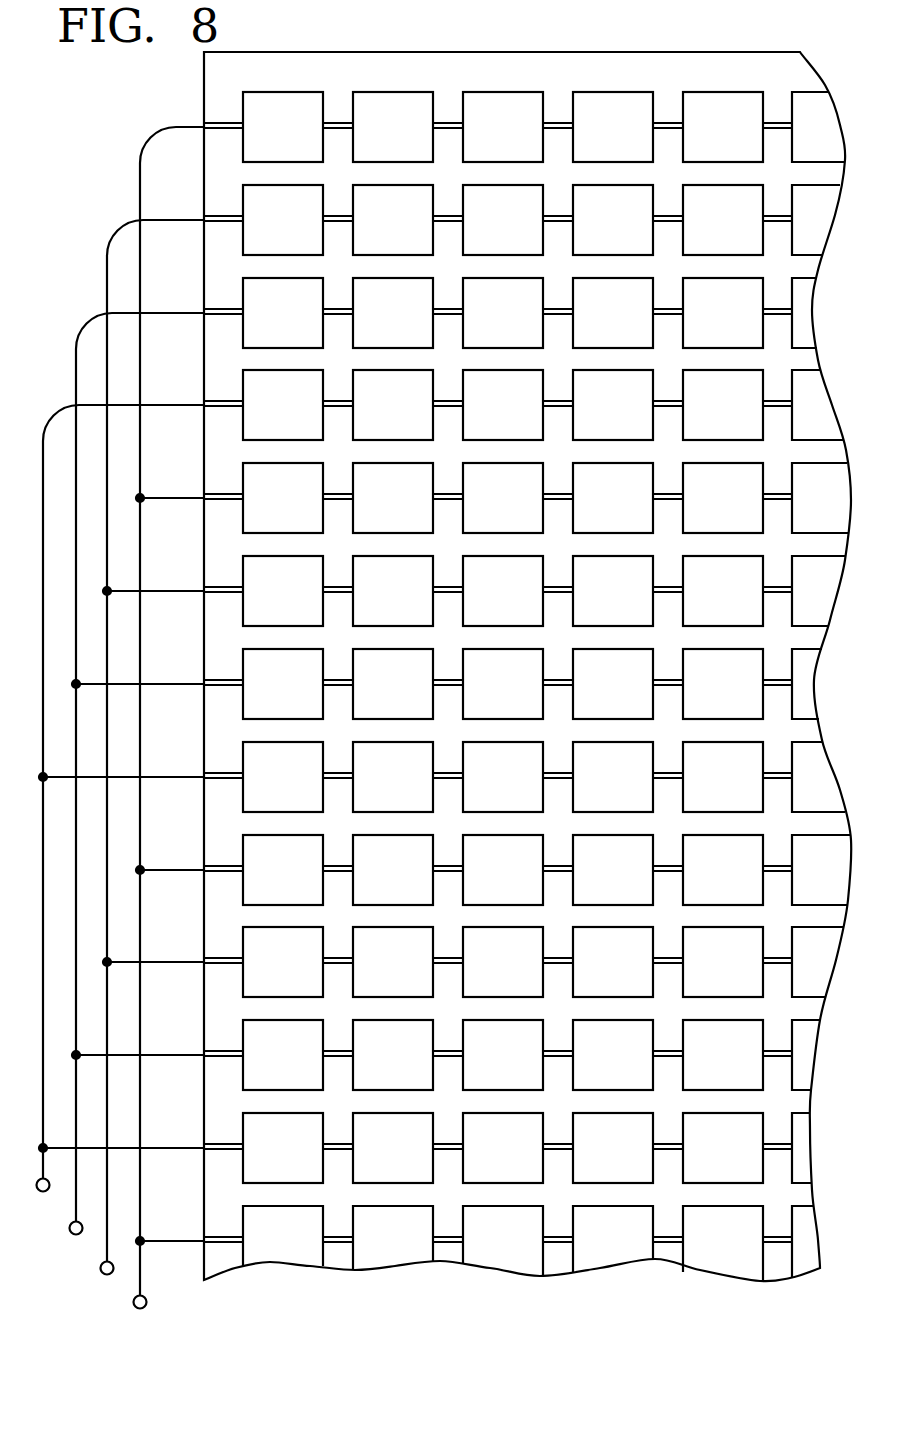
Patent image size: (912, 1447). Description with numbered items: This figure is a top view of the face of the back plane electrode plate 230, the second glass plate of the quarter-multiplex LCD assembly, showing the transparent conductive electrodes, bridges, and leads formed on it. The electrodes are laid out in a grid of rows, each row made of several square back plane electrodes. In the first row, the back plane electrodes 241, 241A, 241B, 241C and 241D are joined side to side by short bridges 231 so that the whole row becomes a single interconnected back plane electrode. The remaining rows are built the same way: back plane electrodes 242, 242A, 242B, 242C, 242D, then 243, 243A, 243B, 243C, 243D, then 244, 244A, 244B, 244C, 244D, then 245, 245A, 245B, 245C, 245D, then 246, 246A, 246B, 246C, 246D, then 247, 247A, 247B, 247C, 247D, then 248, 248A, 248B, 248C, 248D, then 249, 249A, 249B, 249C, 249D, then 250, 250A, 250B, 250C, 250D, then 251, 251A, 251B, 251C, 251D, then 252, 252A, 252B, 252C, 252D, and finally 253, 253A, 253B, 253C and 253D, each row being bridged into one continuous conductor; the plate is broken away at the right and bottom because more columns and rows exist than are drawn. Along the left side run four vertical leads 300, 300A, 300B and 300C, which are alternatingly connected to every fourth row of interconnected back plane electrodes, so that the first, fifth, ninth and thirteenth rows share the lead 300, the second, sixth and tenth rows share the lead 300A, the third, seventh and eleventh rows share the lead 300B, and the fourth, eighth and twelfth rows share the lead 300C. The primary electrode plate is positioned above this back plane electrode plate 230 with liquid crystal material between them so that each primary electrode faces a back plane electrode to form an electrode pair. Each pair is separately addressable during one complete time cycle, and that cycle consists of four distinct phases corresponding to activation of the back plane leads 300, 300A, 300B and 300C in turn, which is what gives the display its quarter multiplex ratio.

The back plane electrode plate 230 is at (203, 100).
The bridges 231 is at (338, 118).
The back plane electrode 241 is at (283, 127).
The back plane electrode 241A is at (393, 127).
The back plane electrode 241B is at (503, 127).
The back plane electrode 241C is at (613, 127).
The back plane electrode 241D is at (723, 127).
The back plane electrode 242 is at (283, 220).
The back plane electrode 242A is at (393, 220).
The back plane electrode 242B is at (503, 220).
The back plane electrode 242C is at (613, 220).
The back plane electrode 242D is at (723, 220).
The back plane electrode 243 is at (283, 313).
The back plane electrode 243A is at (393, 313).
The back plane electrode 243B is at (503, 313).
The back plane electrode 243C is at (613, 313).
The back plane electrode 243D is at (723, 313).
The back plane electrode 244 is at (283, 405).
The back plane electrode 244A is at (393, 405).
The back plane electrode 244B is at (503, 405).
The back plane electrode 244C is at (613, 405).
The back plane electrode 244D is at (723, 405).
The back plane electrode 245 is at (283, 498).
The back plane electrode 245A is at (393, 498).
The back plane electrode 245B is at (503, 498).
The back plane electrode 245C is at (613, 498).
The back plane electrode 245D is at (723, 498).
The back plane electrode 246 is at (283, 591).
The back plane electrode 246A is at (393, 591).
The back plane electrode 246B is at (503, 591).
The back plane electrode 246C is at (613, 591).
The back plane electrode 246D is at (723, 591).
The back plane electrode 247 is at (283, 684).
The back plane electrode 247A is at (393, 684).
The back plane electrode 247B is at (503, 684).
The back plane electrode 247C is at (613, 684).
The back plane electrode 247D is at (723, 684).
The back plane electrode 248 is at (283, 777).
The back plane electrode 248A is at (393, 777).
The back plane electrode 248B is at (503, 777).
The back plane electrode 248C is at (613, 777).
The back plane electrode 248D is at (723, 777).
The back plane electrode 249 is at (283, 870).
The back plane electrode 249A is at (393, 870).
The back plane electrode 249B is at (503, 870).
The back plane electrode 249C is at (613, 870).
The back plane electrode 249D is at (723, 870).
The back plane electrode 250 is at (283, 962).
The back plane electrode 250A is at (393, 962).
The back plane electrode 250B is at (503, 962).
The back plane electrode 250C is at (613, 962).
The back plane electrode 250D is at (723, 962).
The back plane electrode 251 is at (283, 1055).
The back plane electrode 251A is at (393, 1055).
The back plane electrode 251B is at (503, 1055).
The back plane electrode 251C is at (613, 1055).
The back plane electrode 251D is at (723, 1055).
The back plane electrode 252 is at (283, 1148).
The back plane electrode 252A is at (393, 1148).
The back plane electrode 252B is at (503, 1148).
The back plane electrode 252C is at (613, 1148).
The back plane electrode 252D is at (723, 1148).
The back plane electrode 253 is at (283, 1236).
The back plane electrode 253A is at (393, 1238).
The back plane electrode 253B is at (503, 1241).
The back plane electrode 253C is at (613, 1239).
The back plane electrode 253D is at (723, 1243).
The lead 300 is at (163, 731).
The lead 300A is at (141, 759).
The lead 300B is at (129, 785).
The lead 300C is at (113, 810).